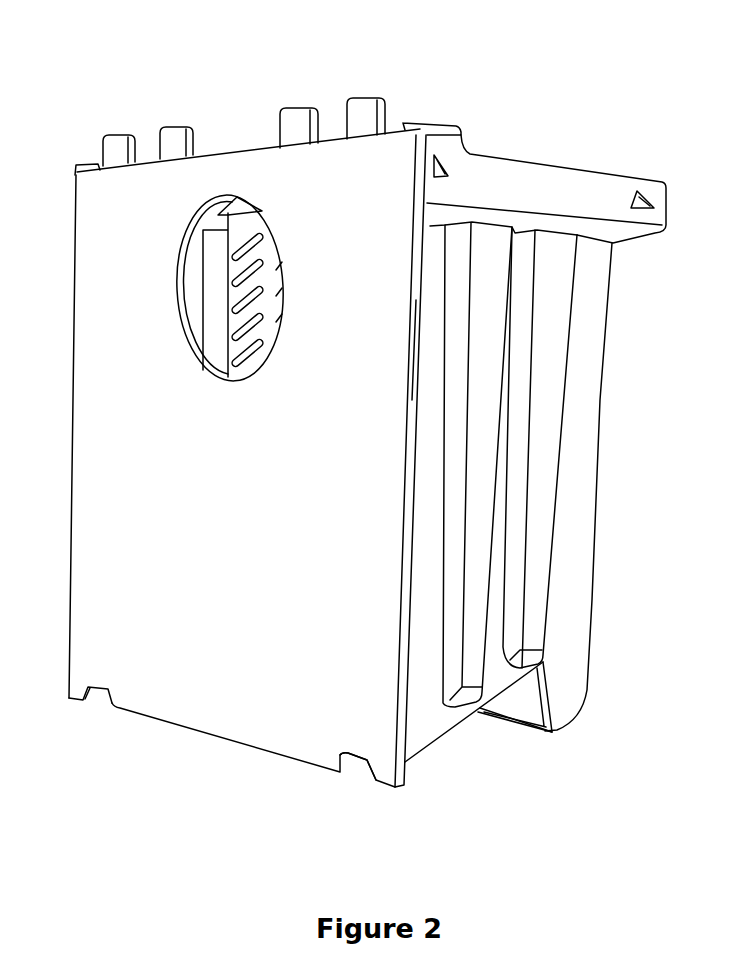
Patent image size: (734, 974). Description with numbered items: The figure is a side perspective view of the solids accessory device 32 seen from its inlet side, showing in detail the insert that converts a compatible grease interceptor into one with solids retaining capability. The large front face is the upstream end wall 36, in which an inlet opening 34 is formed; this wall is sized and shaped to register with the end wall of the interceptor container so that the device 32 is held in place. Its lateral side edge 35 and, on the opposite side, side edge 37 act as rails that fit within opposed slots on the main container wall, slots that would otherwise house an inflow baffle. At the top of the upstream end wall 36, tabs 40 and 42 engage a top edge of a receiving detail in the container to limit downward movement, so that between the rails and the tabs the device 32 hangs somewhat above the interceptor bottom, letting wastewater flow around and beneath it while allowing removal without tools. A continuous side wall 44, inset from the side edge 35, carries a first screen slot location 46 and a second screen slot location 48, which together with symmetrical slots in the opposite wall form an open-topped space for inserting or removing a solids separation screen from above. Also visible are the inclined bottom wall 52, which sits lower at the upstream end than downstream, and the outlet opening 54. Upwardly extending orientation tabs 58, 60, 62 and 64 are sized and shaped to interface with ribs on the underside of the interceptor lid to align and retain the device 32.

The solids accessory device 32 is at (619, 476).
The inlet opening 34 is at (223, 200).
The side edge 35 is at (407, 762).
The upstream end wall 36 is at (110, 387).
The side edge 37 is at (67, 673).
The tab 40 is at (432, 120).
The tab 42 is at (83, 162).
The continuous side wall 44 is at (427, 717).
The first screen slot location 46 is at (488, 318).
The second screen slot location 48 is at (545, 358).
The inclined bottom wall 52 is at (500, 723).
The outlet opening 54 is at (527, 695).
The orientation tab 58 is at (110, 130).
The orientation tab 60 is at (172, 125).
The orientation tab 62 is at (290, 106).
The orientation tab 64 is at (364, 96).